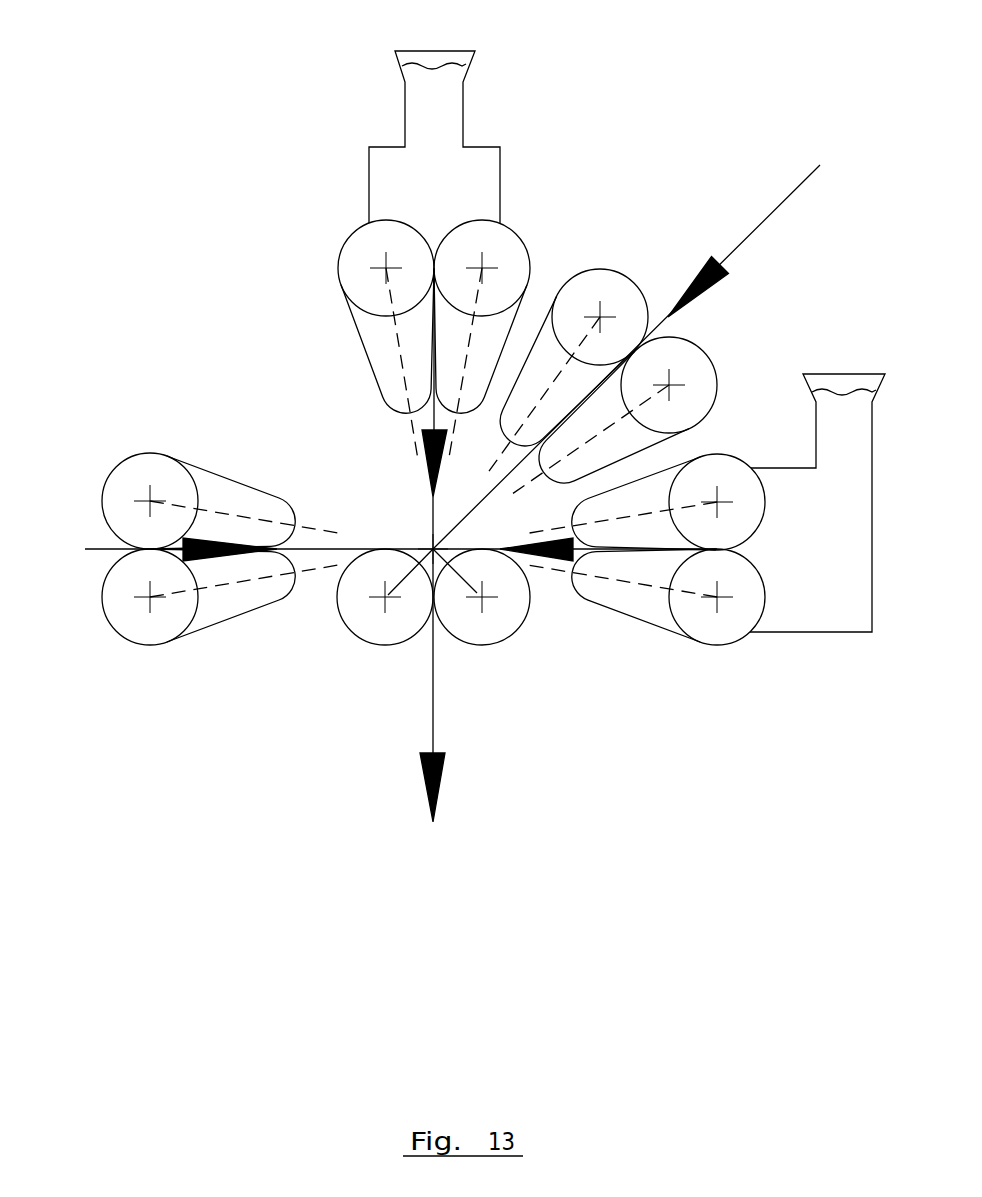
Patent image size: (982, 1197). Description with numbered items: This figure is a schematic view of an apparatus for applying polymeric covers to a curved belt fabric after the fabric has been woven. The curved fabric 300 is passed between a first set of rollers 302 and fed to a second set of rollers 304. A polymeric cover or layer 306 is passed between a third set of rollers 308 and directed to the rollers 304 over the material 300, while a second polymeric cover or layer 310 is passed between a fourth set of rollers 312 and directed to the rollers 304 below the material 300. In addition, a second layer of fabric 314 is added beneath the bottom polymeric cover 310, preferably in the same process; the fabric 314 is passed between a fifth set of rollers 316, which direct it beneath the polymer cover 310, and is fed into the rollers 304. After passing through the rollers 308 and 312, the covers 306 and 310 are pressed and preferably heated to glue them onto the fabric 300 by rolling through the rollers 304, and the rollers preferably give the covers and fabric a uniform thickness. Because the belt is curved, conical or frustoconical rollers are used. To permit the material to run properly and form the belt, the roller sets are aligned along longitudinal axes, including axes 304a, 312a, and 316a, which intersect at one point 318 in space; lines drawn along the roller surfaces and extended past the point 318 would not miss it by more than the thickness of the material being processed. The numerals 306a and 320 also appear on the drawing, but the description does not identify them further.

The curved fabric 300 is at (621, 365).
The first set of rollers 302 is at (639, 240).
The second set of rollers 304 is at (497, 702).
The longitudinal axis 304a is at (463, 585).
The polymeric cover 306 is at (641, 570).
The axles of right rollers 306a is at (682, 507).
The third set of rollers 308 is at (774, 666).
The second polymeric cover 310 is at (433, 549).
The fourth set of rollers 312 is at (524, 195).
The longitudinal axis 312a is at (402, 373).
The second layer of fabric 314 is at (85, 550).
The fifth set of rollers 316 is at (212, 661).
The longitudinal axis 316a is at (257, 578).
The point 318 is at (452, 525).
The lamination line 320 is at (433, 549).